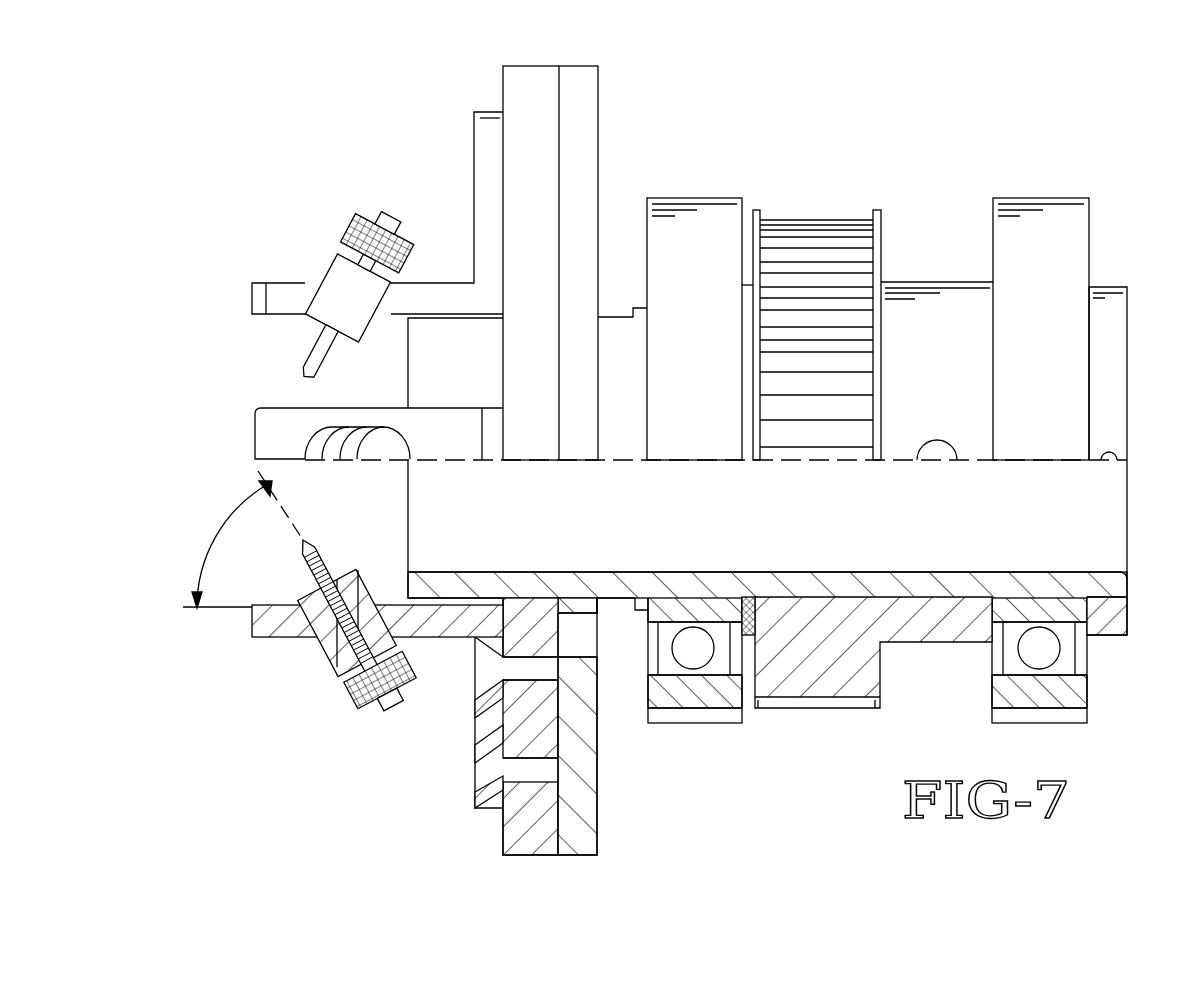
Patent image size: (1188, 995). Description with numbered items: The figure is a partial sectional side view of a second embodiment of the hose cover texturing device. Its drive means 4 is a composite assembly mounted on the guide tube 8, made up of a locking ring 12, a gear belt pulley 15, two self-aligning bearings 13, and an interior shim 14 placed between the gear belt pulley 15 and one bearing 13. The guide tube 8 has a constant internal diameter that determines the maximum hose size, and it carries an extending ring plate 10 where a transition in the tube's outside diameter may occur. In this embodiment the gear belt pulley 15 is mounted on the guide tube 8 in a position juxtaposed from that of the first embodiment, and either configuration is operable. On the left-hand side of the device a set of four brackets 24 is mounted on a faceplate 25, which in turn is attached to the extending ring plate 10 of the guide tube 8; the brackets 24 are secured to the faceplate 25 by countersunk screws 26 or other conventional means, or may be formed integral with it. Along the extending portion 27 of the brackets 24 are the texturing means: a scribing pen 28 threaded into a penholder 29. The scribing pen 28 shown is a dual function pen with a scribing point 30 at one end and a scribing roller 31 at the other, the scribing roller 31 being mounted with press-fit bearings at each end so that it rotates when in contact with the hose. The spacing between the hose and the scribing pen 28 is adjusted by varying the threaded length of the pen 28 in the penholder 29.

The drive means 4 is at (963, 120).
The guide tube 8 is at (870, 572).
The extending ring plate 10 is at (597, 790).
The locking ring 12 is at (1108, 287).
The self-aligning bearings 13 is at (694, 197).
The interior shim 14 is at (747, 635).
The gear belt pulley 15 is at (812, 220).
The brackets 24 is at (474, 165).
The faceplate 25 is at (503, 68).
The countersunk screws 26 is at (487, 770).
The extending portion 27 is at (277, 268).
The scribing pen 28 is at (363, 702).
The penholder 29 is at (325, 650).
The scribing point 30 is at (308, 537).
The scribing roller 31 is at (352, 232).